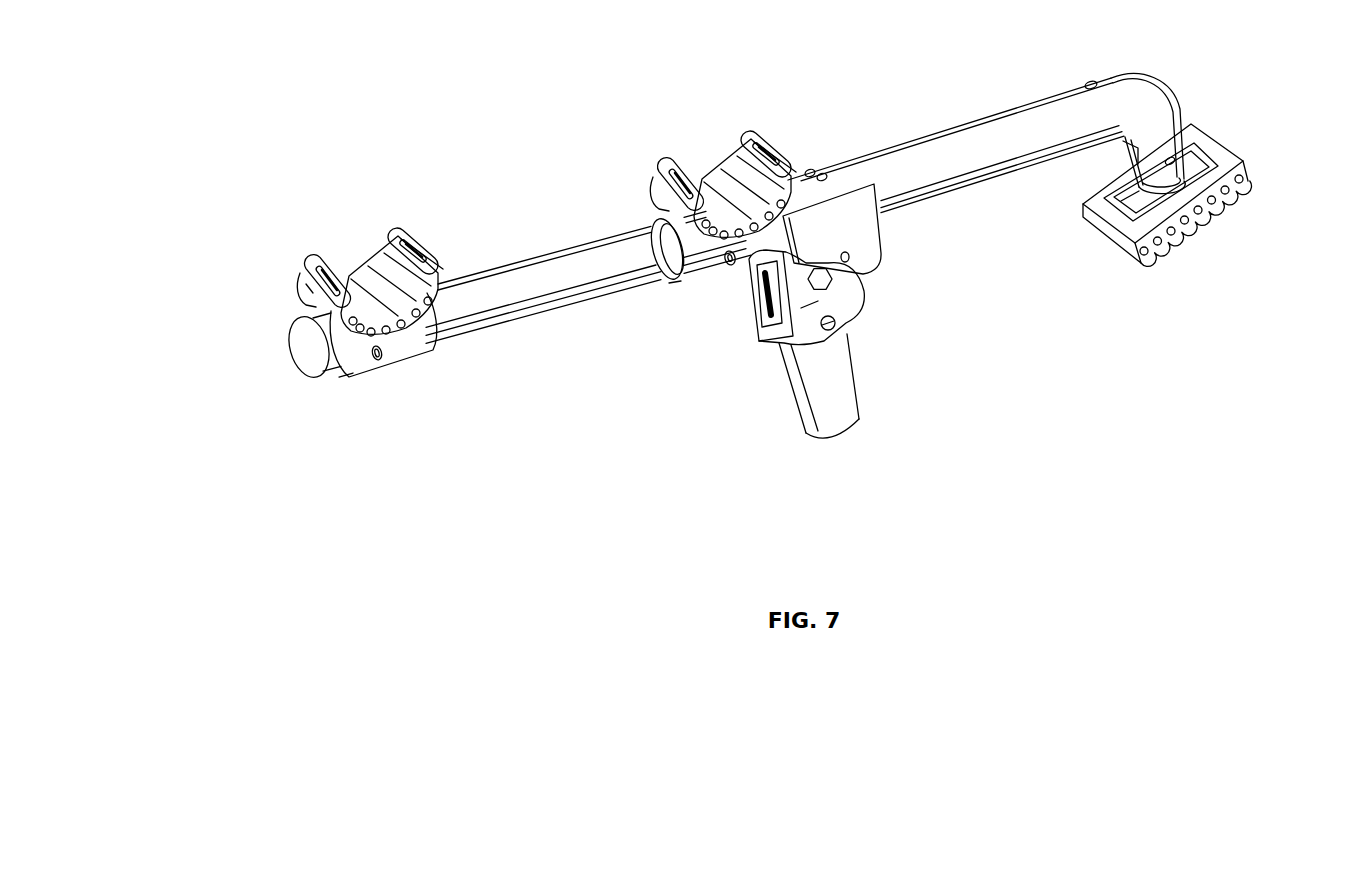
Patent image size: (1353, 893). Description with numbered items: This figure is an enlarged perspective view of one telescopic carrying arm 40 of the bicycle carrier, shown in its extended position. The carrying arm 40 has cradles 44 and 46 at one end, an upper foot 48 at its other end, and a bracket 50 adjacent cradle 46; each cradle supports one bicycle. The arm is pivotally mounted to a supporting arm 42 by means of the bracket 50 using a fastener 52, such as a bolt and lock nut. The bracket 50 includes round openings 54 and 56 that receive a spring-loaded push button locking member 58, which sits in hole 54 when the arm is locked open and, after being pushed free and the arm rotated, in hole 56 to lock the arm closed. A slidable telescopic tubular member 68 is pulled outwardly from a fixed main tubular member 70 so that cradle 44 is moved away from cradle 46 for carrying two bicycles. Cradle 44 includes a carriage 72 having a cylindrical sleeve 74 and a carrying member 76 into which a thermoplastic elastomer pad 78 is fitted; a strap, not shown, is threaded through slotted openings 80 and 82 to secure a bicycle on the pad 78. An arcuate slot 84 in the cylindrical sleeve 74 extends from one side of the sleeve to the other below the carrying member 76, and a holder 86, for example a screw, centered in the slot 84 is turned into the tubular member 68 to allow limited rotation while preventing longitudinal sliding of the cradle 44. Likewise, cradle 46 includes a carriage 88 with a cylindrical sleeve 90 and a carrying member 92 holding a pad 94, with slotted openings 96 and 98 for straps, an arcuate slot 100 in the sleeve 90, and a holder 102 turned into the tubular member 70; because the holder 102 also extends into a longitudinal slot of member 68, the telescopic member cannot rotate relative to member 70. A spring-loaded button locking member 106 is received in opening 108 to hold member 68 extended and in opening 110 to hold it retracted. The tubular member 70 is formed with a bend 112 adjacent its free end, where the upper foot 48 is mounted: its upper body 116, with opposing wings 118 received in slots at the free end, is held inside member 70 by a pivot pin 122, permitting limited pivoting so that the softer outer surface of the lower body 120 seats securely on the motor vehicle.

The carrying arm 40 is at (908, 112).
The supporting arm 42 is at (858, 395).
The cradle 44 is at (353, 228).
The cradle 46 is at (668, 142).
The upper foot 48 is at (1268, 156).
The bracket 50 is at (878, 225).
The fastener 52 is at (827, 277).
The round opening 54 is at (834, 324).
The round opening 56 is at (850, 257).
The spring-loaded push button locking member 58 is at (836, 326).
The telescopic tubular member 68 is at (448, 297).
The main tubular member 70 is at (998, 112).
The carriage 72 is at (410, 368).
The cylindrical sleeve 74 is at (336, 375).
The carrying member 76 is at (303, 297).
The pad 78 is at (430, 297).
The slotted opening 80 is at (318, 290).
The slotted opening 82 is at (421, 247).
The arcuate slot 84 is at (371, 355).
The holder 86 is at (383, 353).
The carriage 88 is at (655, 290).
The cylindrical sleeve 90 is at (675, 270).
The carrying member 92 is at (657, 197).
The pad 94 is at (717, 170).
The slotted opening 96 is at (660, 180).
The slotted opening 98 is at (757, 147).
The arcuate slot 100 is at (725, 262).
The holder 102 is at (747, 268).
The spring-loaded button locking member 106 is at (813, 168).
The opening 108 is at (826, 174).
The opening 110 is at (1100, 82).
The bend 112 is at (1175, 65).
The upper body 116 is at (1170, 205).
The opposing wings 118 is at (1150, 203).
The lower body 120 is at (1228, 162).
The pivot pin 122 is at (1174, 160).